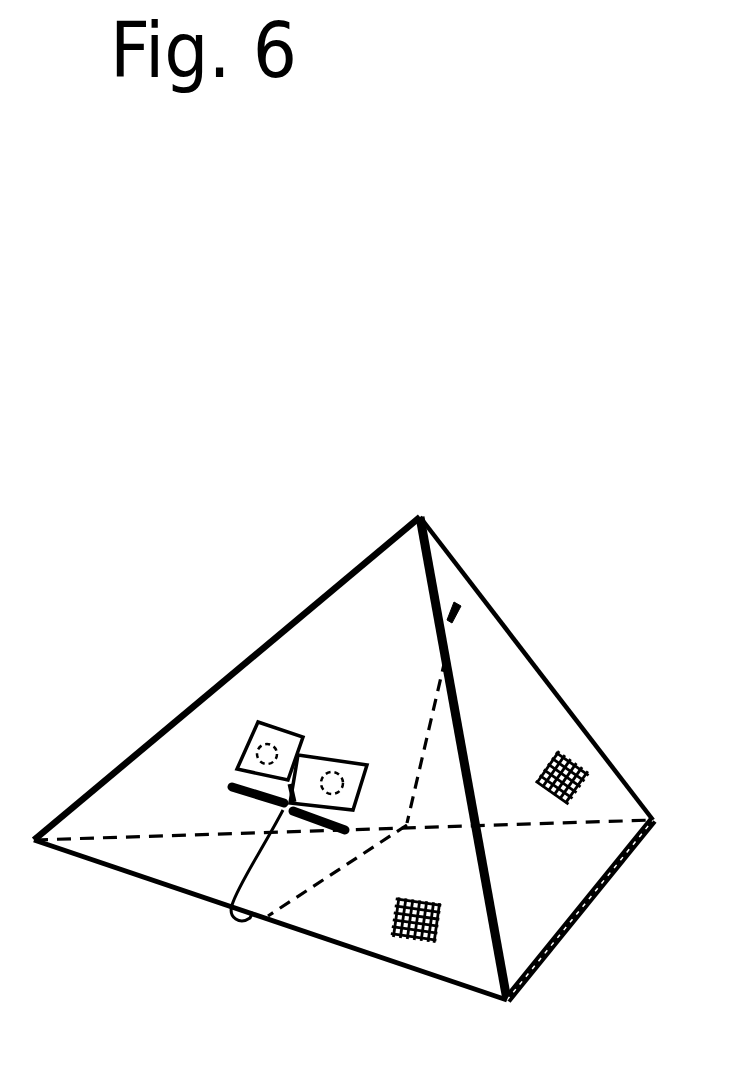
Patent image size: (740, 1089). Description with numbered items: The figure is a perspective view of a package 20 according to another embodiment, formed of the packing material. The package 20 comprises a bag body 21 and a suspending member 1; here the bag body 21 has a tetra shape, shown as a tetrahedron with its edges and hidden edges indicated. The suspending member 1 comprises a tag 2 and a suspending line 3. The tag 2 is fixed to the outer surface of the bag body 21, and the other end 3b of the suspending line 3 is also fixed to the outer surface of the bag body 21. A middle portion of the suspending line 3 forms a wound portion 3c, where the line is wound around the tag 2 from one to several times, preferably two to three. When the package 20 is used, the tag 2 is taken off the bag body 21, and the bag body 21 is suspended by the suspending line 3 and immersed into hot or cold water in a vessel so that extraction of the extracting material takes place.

The package 20 is at (255, 553).
The bag body 21 is at (520, 692).
The suspending member 1 is at (213, 719).
The tag 2 is at (280, 720).
The suspending line 3 is at (356, 858).
The other end of the suspending line 3b is at (461, 604).
The wound portion 3c is at (237, 770).